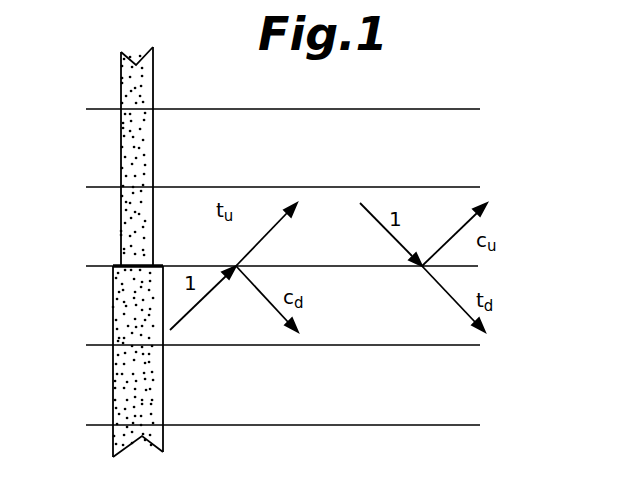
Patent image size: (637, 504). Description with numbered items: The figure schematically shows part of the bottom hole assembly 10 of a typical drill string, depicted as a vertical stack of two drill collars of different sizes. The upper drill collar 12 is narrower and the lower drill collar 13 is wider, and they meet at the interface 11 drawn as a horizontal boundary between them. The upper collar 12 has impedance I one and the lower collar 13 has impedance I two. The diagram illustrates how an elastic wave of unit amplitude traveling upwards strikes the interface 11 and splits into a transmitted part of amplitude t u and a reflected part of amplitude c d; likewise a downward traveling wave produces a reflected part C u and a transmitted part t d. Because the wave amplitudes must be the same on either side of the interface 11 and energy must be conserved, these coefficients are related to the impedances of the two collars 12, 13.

The layered optical structure 10 is at (121, 259).
The interface 11 is at (100, 263).
The upper drill collar 12 is at (151, 118).
The lower drill collar 13 is at (156, 421).